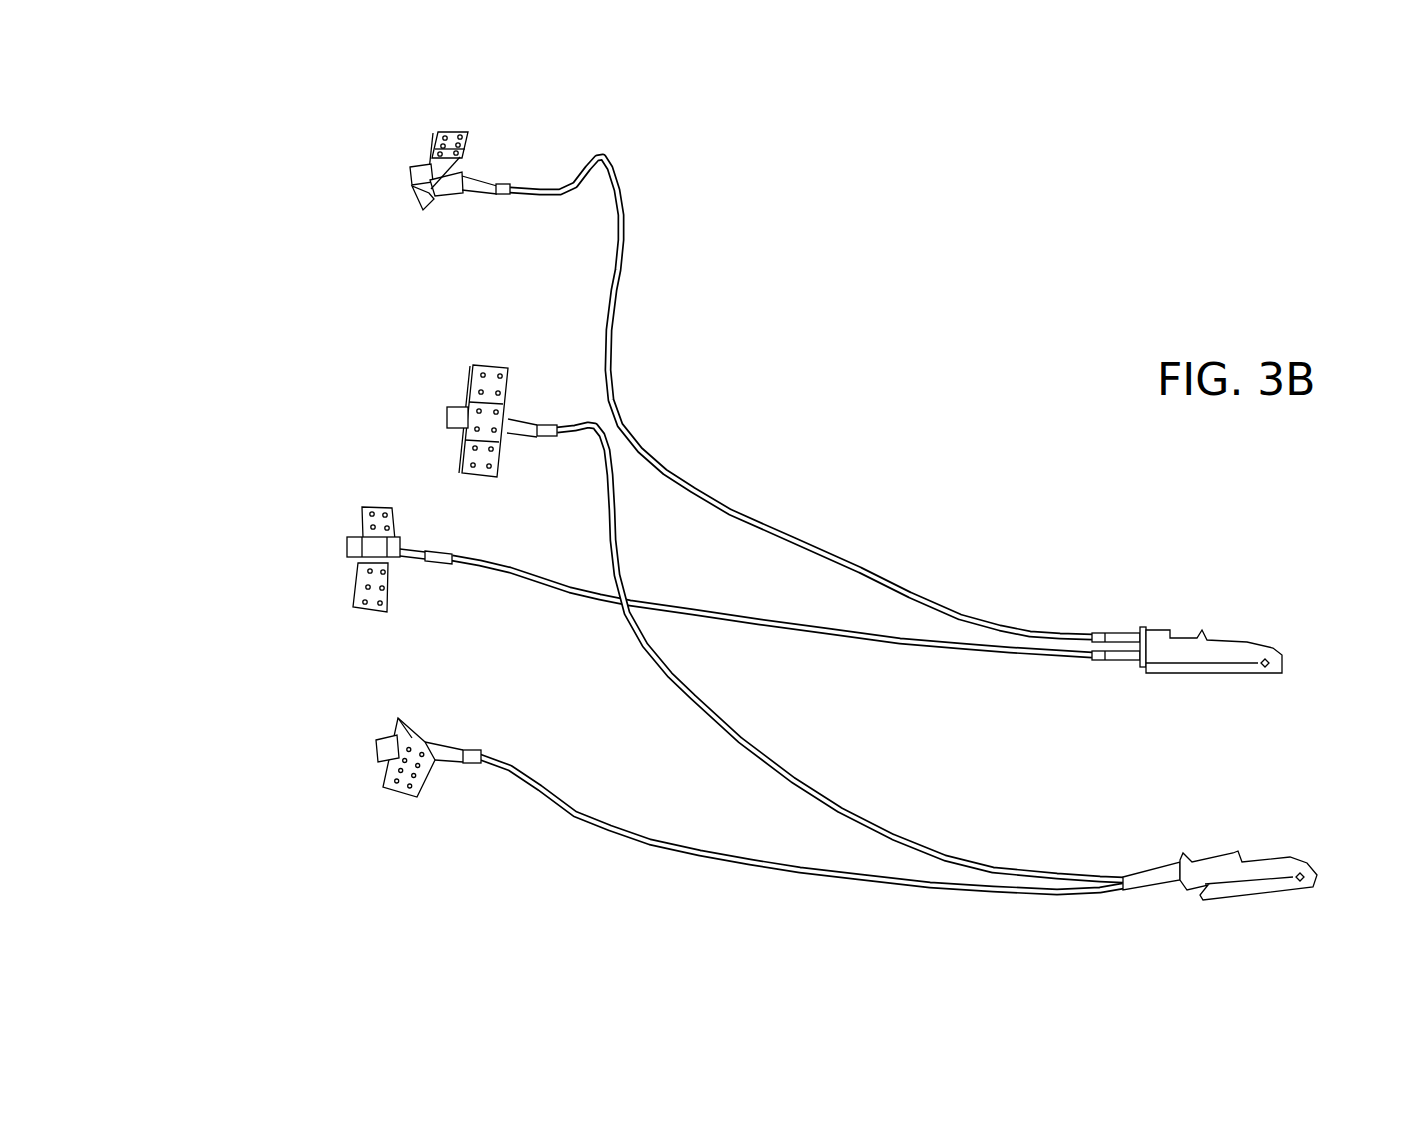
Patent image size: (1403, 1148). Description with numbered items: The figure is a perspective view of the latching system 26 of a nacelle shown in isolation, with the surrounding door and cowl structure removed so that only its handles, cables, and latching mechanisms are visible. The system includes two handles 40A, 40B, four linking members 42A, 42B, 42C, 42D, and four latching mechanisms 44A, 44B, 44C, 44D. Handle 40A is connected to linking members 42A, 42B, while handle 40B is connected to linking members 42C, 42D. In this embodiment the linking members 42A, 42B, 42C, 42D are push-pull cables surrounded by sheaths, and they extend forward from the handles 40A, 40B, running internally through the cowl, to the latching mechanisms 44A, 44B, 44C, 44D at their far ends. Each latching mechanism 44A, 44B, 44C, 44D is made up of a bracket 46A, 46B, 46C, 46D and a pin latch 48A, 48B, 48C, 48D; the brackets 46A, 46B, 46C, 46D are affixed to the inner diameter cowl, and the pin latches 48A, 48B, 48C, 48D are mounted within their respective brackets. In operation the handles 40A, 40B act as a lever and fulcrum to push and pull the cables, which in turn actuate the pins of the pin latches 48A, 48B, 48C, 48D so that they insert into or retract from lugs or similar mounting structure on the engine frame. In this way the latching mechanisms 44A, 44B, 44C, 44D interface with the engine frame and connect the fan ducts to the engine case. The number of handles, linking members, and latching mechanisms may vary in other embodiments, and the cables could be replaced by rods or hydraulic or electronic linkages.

The latching system 26 is at (954, 290).
The handle 40A is at (1267, 873).
The handle 40B is at (1232, 650).
The linking member 42A is at (773, 868).
The linking member 42B is at (923, 840).
The linking member 42C is at (875, 637).
The linking member 42D is at (852, 565).
The latching mechanism 44A is at (398, 826).
The latching mechanism 44B is at (420, 412).
The latching mechanism 44C is at (342, 595).
The latching mechanism 44D is at (418, 136).
The bracket 46A is at (425, 778).
The bracket 46B is at (500, 389).
The bracket 46C is at (372, 510).
The bracket 46D is at (460, 132).
The pin latch 48A is at (383, 740).
The pin latch 48B is at (450, 402).
The pin latch 48C is at (347, 547).
The pin latch 48D is at (413, 187).